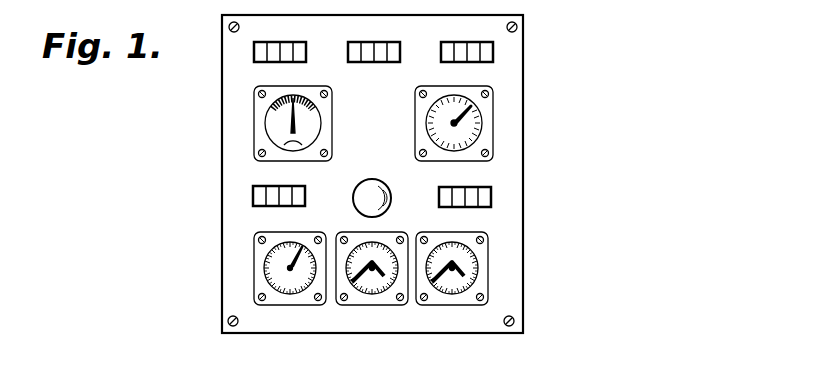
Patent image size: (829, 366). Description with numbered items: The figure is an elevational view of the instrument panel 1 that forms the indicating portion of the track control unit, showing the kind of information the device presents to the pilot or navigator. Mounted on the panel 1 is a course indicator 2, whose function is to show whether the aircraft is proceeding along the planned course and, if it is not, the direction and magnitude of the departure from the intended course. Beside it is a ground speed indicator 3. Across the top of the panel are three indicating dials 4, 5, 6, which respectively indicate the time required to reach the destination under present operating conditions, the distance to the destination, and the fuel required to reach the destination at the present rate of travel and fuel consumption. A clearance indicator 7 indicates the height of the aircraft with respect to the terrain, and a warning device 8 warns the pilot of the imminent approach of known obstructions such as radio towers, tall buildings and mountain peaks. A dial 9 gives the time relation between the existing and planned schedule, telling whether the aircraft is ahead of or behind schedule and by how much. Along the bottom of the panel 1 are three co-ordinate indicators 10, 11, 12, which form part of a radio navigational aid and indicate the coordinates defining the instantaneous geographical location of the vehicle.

The instrument panel 1 is at (522, 178).
The course indicator 2 is at (254, 118).
The ground speed indicator 3 is at (492, 120).
The indicating dial 4 is at (307, 48).
The indicating dial 5 is at (402, 46).
The indicating dial 6 is at (494, 52).
The clearance indicator 7 is at (253, 197).
The warning device 8 is at (375, 182).
The dial 9 is at (492, 199).
The co-ordinate indicator 10 is at (255, 303).
The co-ordinate indicator 11 is at (338, 302).
The co-ordinate indicator 12 is at (490, 282).